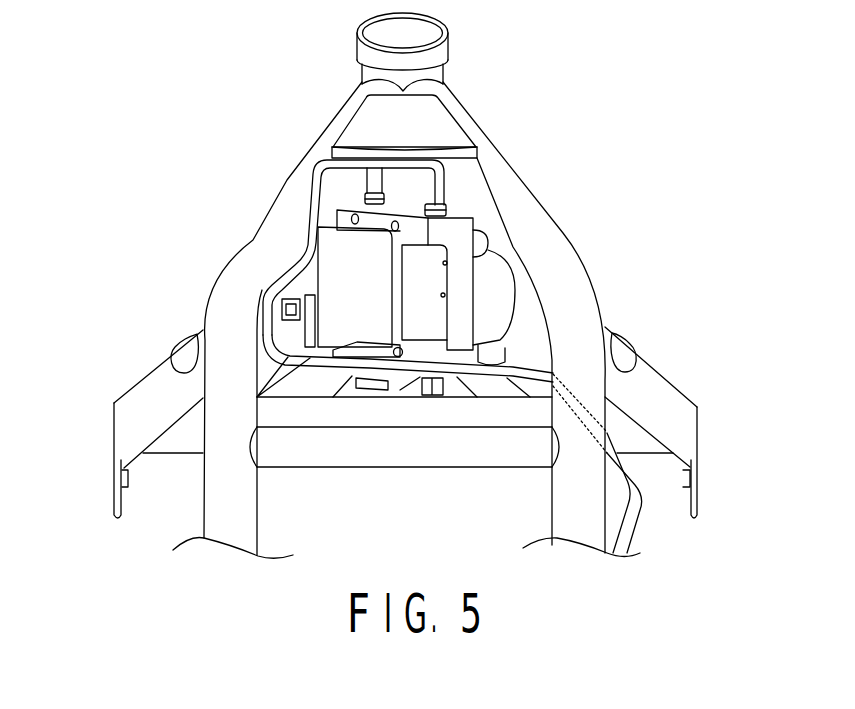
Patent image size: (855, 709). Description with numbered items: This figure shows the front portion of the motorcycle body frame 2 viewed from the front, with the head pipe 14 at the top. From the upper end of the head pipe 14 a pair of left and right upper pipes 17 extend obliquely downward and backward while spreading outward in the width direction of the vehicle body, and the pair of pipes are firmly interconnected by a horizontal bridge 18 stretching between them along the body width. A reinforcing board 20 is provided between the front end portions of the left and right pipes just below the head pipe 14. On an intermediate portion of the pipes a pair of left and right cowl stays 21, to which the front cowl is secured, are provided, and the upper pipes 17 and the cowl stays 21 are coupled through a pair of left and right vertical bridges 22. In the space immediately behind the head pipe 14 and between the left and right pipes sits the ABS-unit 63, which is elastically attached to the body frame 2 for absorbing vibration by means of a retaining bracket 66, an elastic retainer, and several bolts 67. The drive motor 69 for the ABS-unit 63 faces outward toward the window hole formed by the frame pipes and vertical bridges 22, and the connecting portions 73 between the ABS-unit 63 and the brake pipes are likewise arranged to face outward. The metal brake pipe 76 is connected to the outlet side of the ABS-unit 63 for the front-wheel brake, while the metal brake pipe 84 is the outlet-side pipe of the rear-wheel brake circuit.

The body frame 2 is at (207, 288).
The head pipe 14 is at (448, 43).
The upper pipes 17 is at (286, 178).
The horizontal bridges 18 is at (404, 469).
The reinforcing board 20 is at (433, 110).
The cowl stays 21 is at (134, 383).
The vertical bridges 22 is at (537, 317).
The ABS-unit 63 is at (346, 267).
The retaining bracket 66 is at (298, 342).
The bolts 67 is at (272, 296).
The drive motor 69 is at (497, 280).
The connecting portions 73 is at (385, 194).
The metal brake pipe 76 is at (377, 178).
The metal brake pipe 84 is at (311, 360).